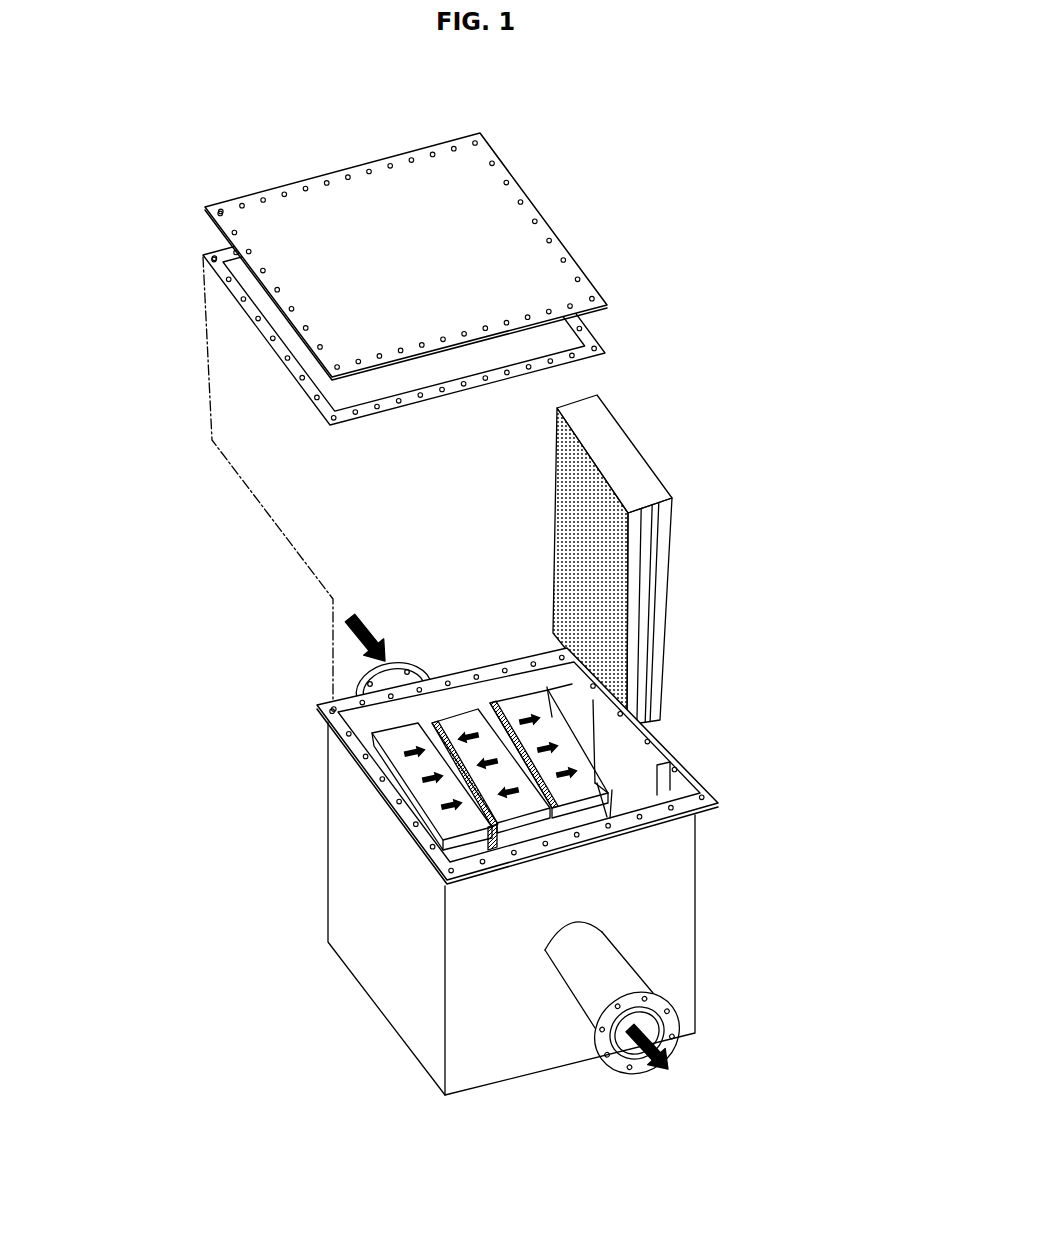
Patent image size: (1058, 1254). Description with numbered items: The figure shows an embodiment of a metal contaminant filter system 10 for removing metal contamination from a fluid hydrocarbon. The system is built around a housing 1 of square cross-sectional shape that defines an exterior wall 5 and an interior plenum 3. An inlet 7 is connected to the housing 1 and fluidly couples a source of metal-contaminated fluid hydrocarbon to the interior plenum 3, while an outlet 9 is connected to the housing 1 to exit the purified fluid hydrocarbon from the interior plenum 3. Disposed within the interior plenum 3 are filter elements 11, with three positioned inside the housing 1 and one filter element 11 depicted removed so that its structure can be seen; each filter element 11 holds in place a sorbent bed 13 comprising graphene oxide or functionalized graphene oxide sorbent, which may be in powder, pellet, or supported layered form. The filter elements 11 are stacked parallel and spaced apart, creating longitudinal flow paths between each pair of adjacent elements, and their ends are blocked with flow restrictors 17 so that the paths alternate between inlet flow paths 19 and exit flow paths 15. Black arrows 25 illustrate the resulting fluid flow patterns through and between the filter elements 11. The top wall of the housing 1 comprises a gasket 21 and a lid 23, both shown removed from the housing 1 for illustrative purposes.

The housing 1 is at (372, 983).
The interior plenum 3 is at (668, 797).
The exterior wall 5 is at (660, 820).
The inlet 7 is at (351, 616).
The outlet 9 is at (662, 1070).
The metal contaminant filter system 10 is at (688, 182).
The filter element 11 is at (646, 556).
The sorbent bed 13 is at (652, 573).
The exit flow path 15 is at (500, 850).
The flow restrictor 17 is at (432, 722).
The inlet flow path 19 is at (490, 704).
The gasket 21 is at (392, 412).
The lid 23 is at (520, 188).
The flow path arrows 25 is at (400, 751).